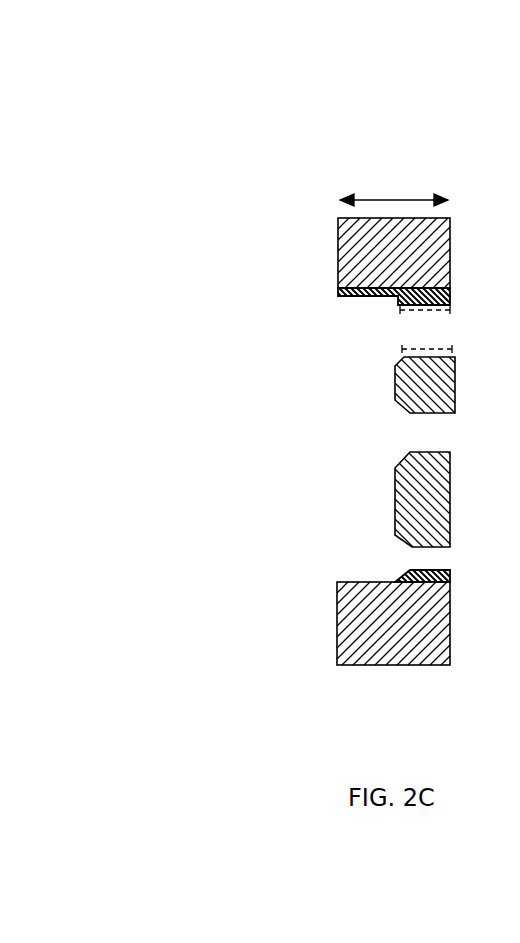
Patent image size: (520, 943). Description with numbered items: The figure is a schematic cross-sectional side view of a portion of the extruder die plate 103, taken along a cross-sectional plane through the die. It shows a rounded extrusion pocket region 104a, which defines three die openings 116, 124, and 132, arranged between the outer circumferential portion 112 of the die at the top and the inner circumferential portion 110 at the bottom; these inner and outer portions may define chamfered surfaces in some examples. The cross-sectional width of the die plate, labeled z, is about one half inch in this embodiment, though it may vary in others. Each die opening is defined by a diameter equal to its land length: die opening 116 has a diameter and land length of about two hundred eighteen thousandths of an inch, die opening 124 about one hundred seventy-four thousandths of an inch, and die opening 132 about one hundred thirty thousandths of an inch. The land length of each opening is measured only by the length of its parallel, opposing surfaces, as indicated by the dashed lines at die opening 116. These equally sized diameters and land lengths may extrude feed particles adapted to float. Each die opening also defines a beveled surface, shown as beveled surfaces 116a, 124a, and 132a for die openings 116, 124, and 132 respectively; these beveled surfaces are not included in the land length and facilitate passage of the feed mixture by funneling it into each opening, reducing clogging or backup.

The extruder die plate 103 is at (218, 108).
The rounded extrusion pocket region 104a is at (222, 453).
The inner circumferential portion 110 is at (368, 632).
The outer circumferential portion 112 is at (367, 254).
The die opening 116 is at (396, 320).
The beveled surface 116a is at (400, 306).
The die opening 124 is at (424, 452).
The beveled surface 124a is at (400, 412).
The die opening 132 is at (427, 556).
The beveled surface 132a is at (400, 540).